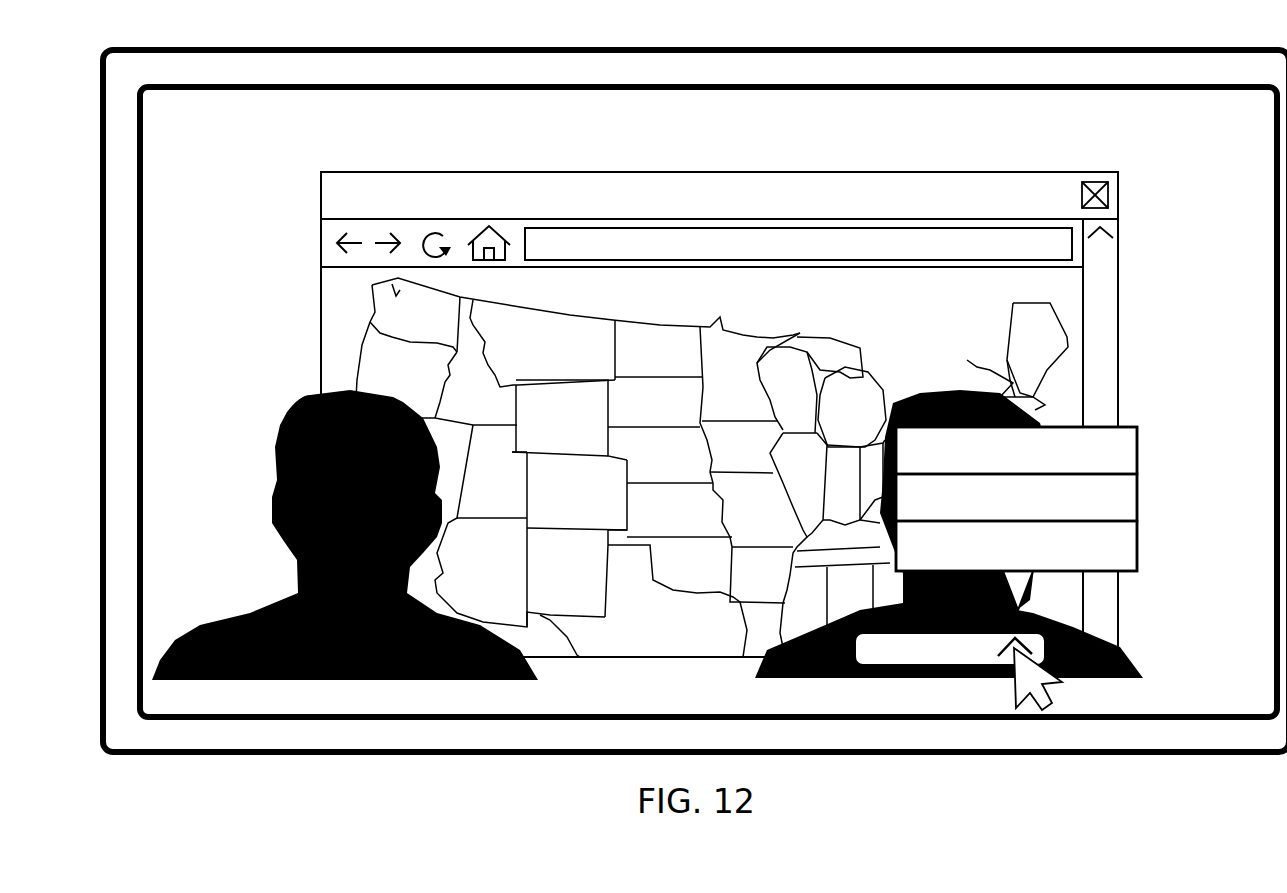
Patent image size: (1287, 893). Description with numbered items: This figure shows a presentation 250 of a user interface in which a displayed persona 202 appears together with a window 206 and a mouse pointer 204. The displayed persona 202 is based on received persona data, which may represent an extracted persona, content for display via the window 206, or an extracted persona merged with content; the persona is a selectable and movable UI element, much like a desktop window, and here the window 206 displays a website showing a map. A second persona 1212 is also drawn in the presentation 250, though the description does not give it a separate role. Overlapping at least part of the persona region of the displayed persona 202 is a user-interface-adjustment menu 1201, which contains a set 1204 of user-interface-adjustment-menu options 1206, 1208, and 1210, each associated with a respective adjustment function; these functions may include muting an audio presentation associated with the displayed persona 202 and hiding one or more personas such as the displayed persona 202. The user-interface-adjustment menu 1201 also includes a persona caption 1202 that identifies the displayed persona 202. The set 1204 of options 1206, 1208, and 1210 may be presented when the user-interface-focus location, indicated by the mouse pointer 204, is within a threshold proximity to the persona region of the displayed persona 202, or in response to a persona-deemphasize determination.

The presentation of a user interface 250 is at (150, 50).
The window 206 is at (370, 172).
The user-interface-adjustment menu 1201 is at (785, 395).
The first user persona silhouette 1212 is at (278, 535).
The persona caption 1202 is at (778, 677).
The displayed persona 202 is at (966, 615).
The set of user-interface-adjustment-menu options 1204 is at (1068, 477).
The user-interface-adjustment-menu option 1206 is at (1138, 441).
The user-interface-adjustment-menu option 1208 is at (1138, 489).
The user-interface-adjustment-menu option 1210 is at (1138, 538).
The mouse pointer 204 is at (1040, 712).